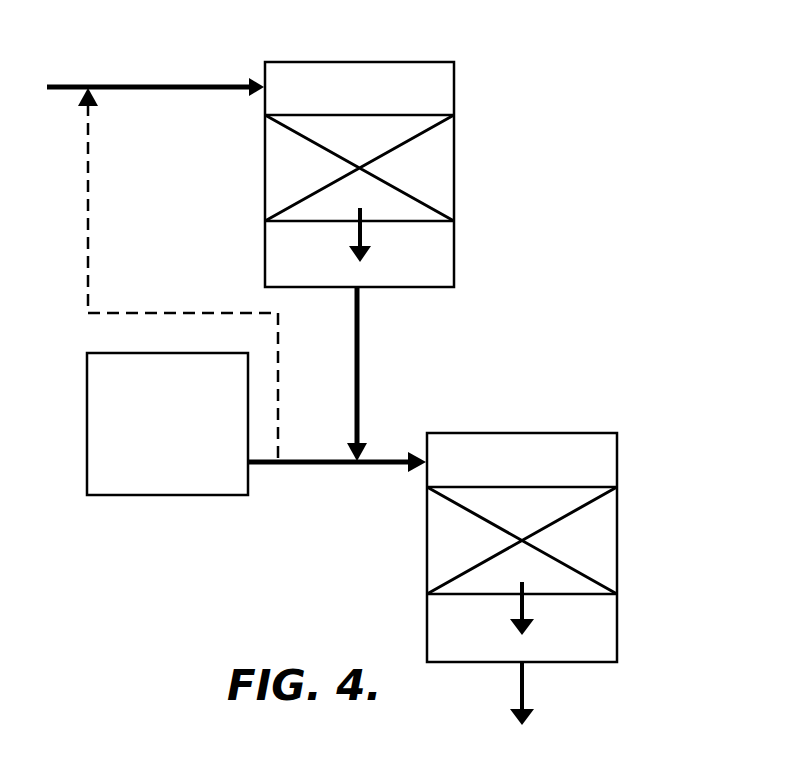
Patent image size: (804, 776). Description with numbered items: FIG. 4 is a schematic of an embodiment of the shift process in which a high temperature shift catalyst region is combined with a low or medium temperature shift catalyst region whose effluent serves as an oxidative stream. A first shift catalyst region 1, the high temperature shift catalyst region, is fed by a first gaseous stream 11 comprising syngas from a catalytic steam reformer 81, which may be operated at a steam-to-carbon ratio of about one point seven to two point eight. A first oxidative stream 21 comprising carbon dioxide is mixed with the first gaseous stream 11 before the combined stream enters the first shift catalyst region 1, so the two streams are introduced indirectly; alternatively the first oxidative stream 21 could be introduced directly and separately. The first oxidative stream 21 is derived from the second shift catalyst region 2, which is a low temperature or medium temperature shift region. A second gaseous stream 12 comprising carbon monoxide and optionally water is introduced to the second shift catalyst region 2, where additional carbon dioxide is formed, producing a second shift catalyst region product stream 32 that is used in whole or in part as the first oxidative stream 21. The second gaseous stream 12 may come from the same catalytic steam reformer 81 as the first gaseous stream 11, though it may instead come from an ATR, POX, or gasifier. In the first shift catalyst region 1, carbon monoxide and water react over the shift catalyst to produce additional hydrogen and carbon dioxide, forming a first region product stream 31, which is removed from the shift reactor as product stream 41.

The high temperature shift catalyst region 1 is at (603, 553).
The second shift catalyst region 2 is at (441, 181).
The first gaseous stream 11 is at (305, 462).
The second gaseous stream 12 is at (183, 88).
The first oxidative stream 21 is at (360, 380).
The first region product stream 31 is at (525, 607).
The second shift catalyst region product stream 32 is at (362, 233).
The product stream 41 is at (525, 687).
The catalytic steam reformer 81 is at (184, 446).